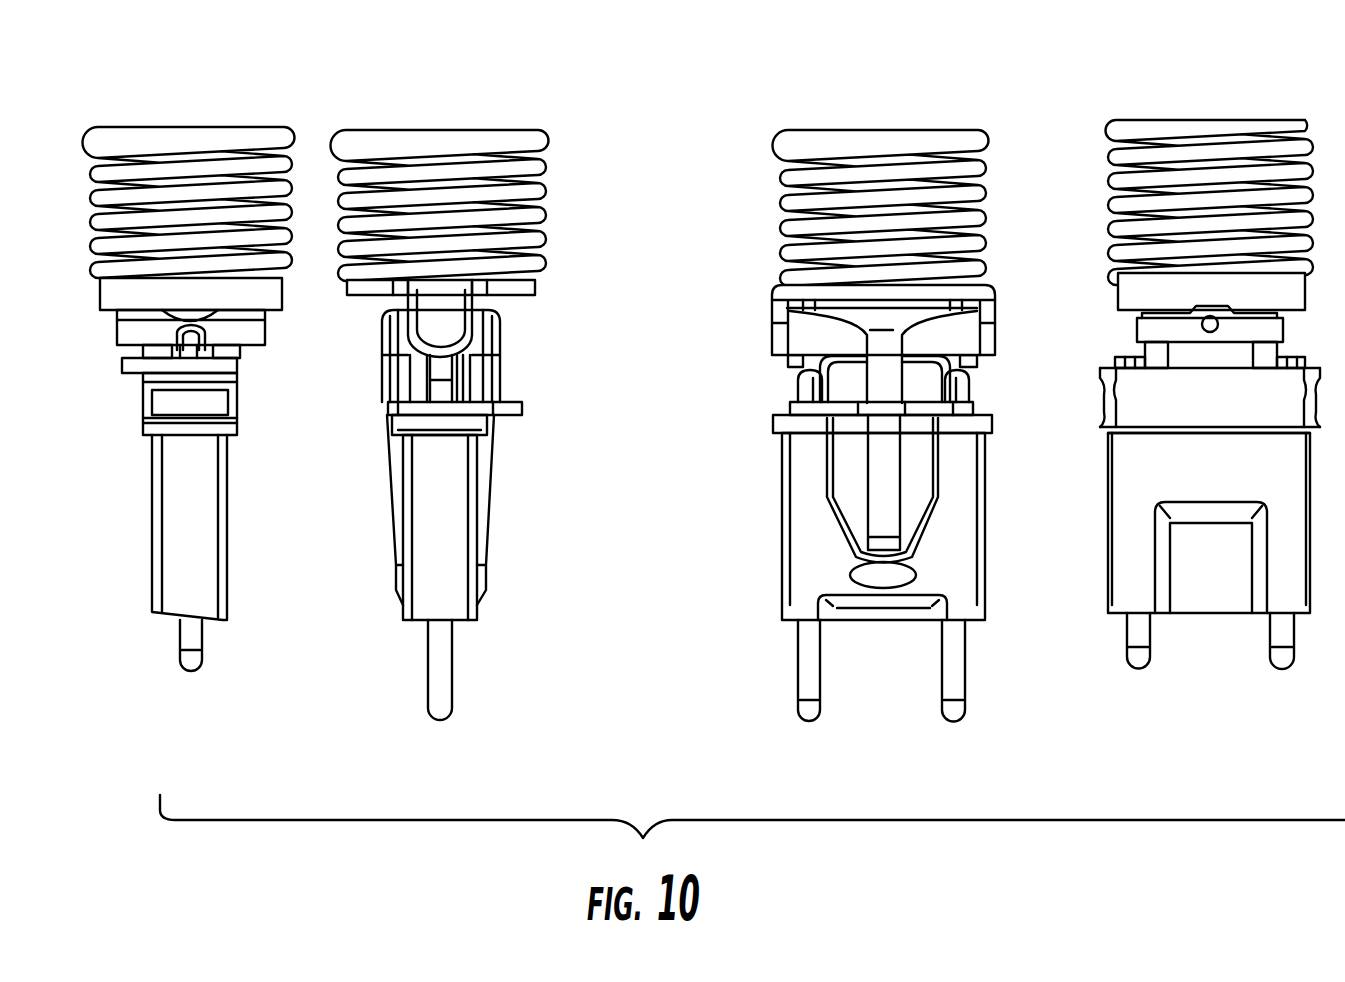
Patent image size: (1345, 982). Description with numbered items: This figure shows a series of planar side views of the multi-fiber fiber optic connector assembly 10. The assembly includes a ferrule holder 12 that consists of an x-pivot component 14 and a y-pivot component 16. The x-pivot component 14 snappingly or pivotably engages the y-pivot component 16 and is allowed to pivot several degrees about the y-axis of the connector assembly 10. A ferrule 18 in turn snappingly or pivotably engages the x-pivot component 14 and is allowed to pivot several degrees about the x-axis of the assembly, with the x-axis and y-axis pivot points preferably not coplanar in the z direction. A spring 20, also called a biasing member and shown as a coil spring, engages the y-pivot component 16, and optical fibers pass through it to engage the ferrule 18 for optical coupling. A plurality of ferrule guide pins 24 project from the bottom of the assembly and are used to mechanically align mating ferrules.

The multi-fiber fiber optic connector assembly 10 is at (1287, 31).
The ferrule holder 12 is at (726, 484).
The x-pivot component 14 is at (503, 468).
The y-pivot component 16 is at (542, 288).
The ferrule 18 is at (487, 607).
The spring 20 is at (542, 143).
The ferrule guide pins 24 is at (475, 728).